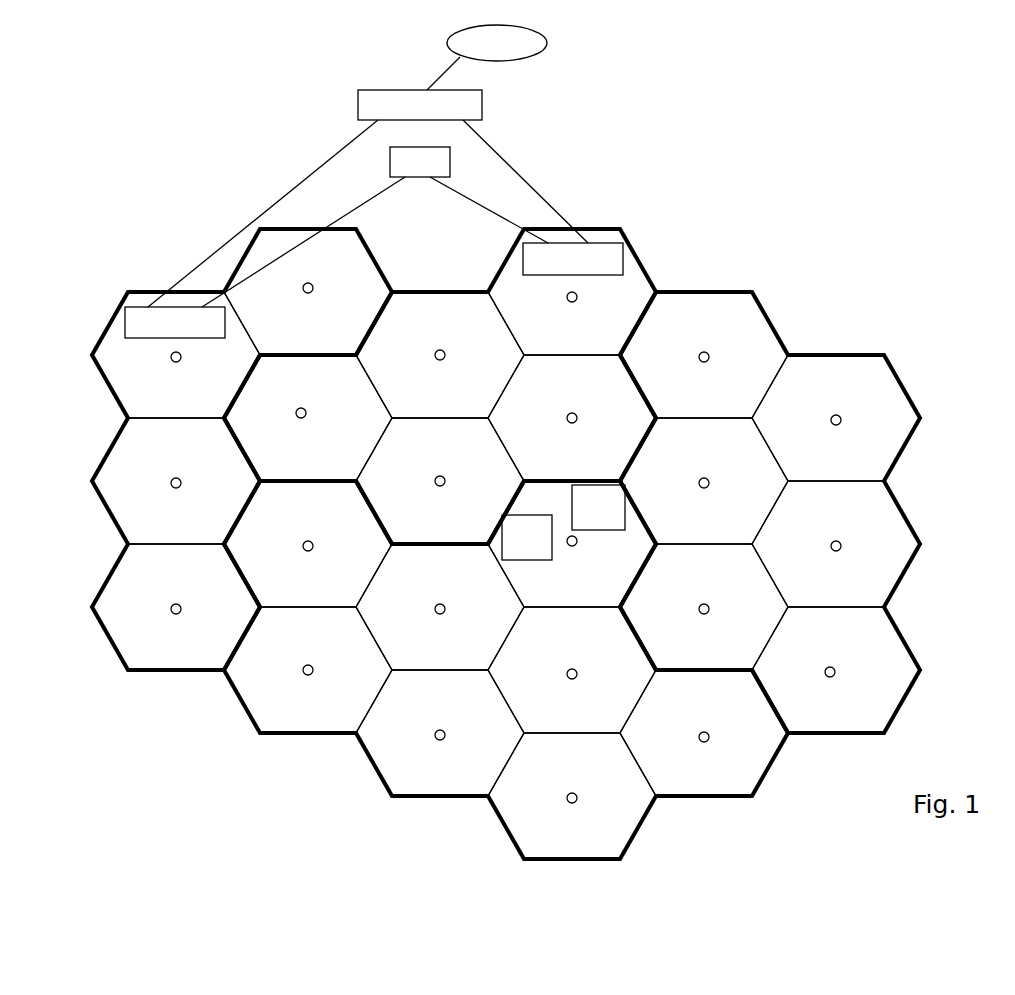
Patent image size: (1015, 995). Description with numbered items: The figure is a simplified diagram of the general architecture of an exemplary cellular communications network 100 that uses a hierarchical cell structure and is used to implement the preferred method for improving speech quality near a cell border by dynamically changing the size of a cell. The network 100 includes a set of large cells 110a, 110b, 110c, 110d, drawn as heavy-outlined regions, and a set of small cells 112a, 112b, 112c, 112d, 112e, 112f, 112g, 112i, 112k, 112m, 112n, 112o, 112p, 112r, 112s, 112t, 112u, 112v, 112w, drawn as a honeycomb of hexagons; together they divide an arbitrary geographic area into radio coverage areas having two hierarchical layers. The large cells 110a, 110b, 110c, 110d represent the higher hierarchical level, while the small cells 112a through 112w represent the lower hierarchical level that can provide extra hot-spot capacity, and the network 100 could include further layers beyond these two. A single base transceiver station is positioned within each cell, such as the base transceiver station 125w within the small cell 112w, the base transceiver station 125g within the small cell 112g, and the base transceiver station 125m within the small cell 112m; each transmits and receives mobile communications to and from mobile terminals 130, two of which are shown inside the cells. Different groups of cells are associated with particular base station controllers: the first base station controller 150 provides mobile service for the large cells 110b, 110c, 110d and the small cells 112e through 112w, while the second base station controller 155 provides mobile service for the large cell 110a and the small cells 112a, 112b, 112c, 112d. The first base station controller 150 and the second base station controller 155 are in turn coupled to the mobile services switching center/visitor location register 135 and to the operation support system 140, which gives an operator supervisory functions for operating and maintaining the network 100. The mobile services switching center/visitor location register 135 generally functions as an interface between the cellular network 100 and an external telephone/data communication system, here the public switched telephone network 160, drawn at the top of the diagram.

The cellular communications network 100 is at (830, 174).
The large cell 110a is at (112, 320).
The large cell 110b is at (637, 258).
The large cell 110c is at (514, 843).
The large cell 110d is at (900, 633).
The small cell 112a is at (176, 355).
The small cell 112b is at (374, 323).
The small cell 112c is at (176, 481).
The small cell 112d is at (176, 607).
The small cell 112e is at (308, 670).
The small cell 112f is at (308, 544).
The small cell 112g is at (374, 512).
The small cell 112i is at (638, 323).
The small cell 112k is at (836, 418).
The small cell 112m is at (836, 670).
The small cell 112n is at (704, 733).
The small cell 112o is at (704, 670).
The small cell 112p is at (440, 733).
The small cell 112r is at (440, 481).
The small cell 112s is at (572, 418).
The small cell 112t is at (704, 481).
The small cell 112u is at (704, 607).
The small cell 112v is at (572, 670).
The small cell 112w is at (572, 544).
The base transceiver station 125g is at (307, 413).
The base transceiver station 125w is at (578, 541).
The base transceiver station 125m is at (836, 672).
The mobile terminal 130 is at (563, 522).
The mobile services switching center/visitor location register (MSC/VLR) 135 is at (482, 103).
The operation support system (OSS) 140 is at (420, 178).
The base station controller BSC-1 150 is at (608, 243).
The base station controller BSC-2 155 is at (140, 338).
The public switched telephone network (PSTN) 160 is at (548, 43).